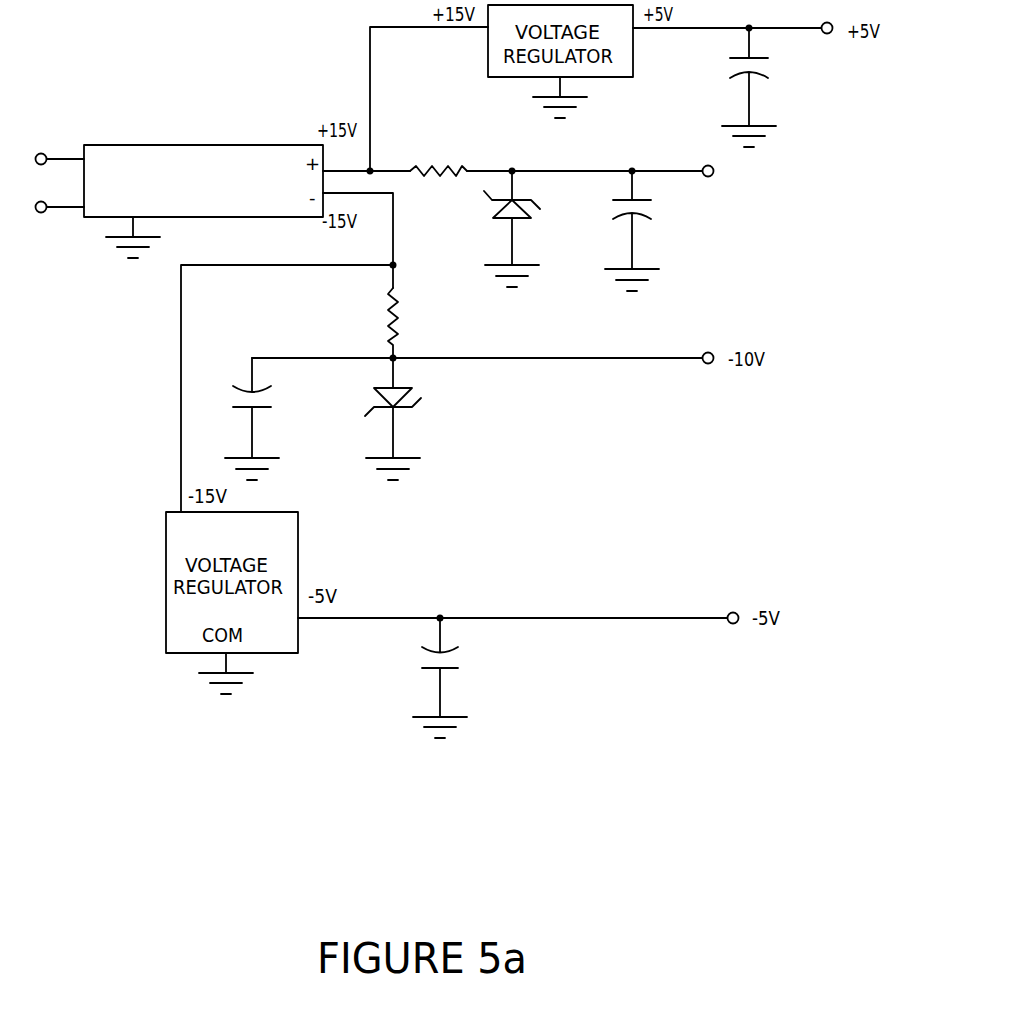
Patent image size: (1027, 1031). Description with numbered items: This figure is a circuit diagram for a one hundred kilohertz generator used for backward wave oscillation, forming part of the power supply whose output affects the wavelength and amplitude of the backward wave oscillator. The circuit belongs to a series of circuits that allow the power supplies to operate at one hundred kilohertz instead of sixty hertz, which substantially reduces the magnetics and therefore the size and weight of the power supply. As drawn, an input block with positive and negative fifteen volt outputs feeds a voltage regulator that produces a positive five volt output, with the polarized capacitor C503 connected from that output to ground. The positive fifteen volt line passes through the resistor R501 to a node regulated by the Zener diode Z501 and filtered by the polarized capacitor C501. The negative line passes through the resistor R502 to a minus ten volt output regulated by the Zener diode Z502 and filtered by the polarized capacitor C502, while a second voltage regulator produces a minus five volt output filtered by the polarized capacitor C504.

The resistor R501 is at (438, 154).
The resistor R502 is at (421, 323).
The Zener diode Z501 is at (532, 229).
The Zener diode Z502 is at (413, 419).
The polarized capacitor C501 is at (654, 231).
The polarized capacitor C502 is at (276, 419).
The polarized capacitor C503 is at (772, 87).
The polarized capacitor C504 is at (465, 678).